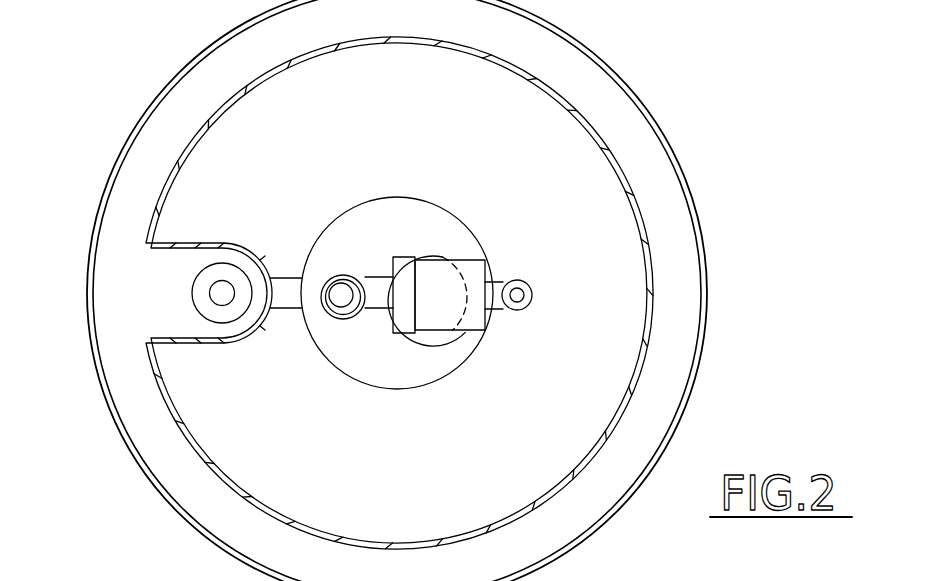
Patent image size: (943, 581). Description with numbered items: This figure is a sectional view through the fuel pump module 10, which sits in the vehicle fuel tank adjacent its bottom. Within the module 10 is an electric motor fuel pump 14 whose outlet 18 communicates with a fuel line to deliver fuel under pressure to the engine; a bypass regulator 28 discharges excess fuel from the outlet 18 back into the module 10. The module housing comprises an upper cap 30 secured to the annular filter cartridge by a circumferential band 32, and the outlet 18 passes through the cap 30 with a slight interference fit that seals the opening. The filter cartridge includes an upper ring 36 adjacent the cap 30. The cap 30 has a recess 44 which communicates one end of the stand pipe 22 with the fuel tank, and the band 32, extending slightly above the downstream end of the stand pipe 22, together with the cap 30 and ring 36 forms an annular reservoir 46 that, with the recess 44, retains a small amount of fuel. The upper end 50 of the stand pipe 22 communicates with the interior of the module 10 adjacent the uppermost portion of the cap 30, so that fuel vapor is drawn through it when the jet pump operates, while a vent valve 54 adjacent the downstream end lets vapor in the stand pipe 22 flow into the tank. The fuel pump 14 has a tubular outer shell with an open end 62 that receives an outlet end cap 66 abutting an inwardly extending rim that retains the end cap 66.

The fuel pump module 10 is at (410, 290).
The electric motor fuel pump 14 is at (436, 267).
The outlet 18 is at (340, 293).
The stand pipe 22 is at (535, 303).
The bypass regulator 28 is at (467, 330).
The upper cap 30 is at (653, 300).
The circumferential band 32 is at (698, 370).
The upper ring 36 is at (673, 205).
The recess 44 is at (160, 259).
The annular reservoir 46 is at (435, 290).
The upper end 50 is at (218, 324).
The vent valve 54 is at (210, 292).
The open end 62 is at (357, 222).
The outlet end cap 66 is at (424, 250).